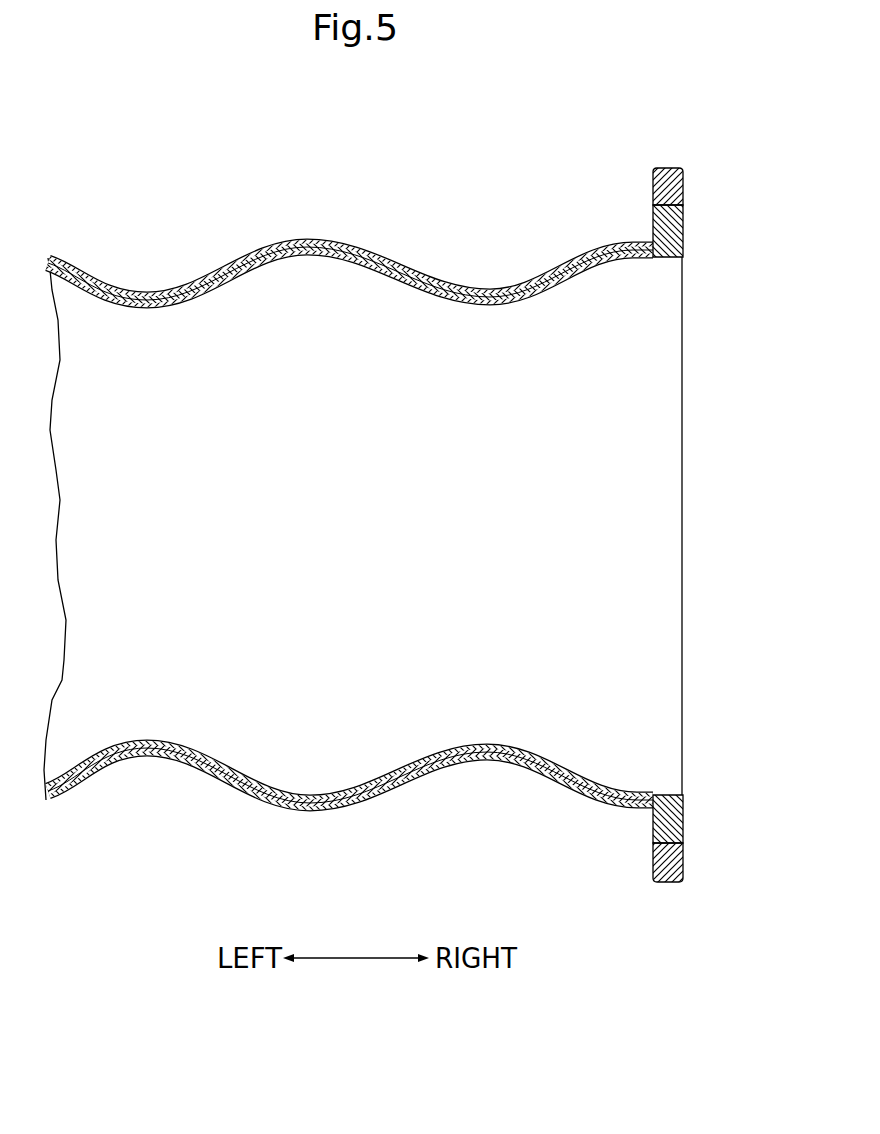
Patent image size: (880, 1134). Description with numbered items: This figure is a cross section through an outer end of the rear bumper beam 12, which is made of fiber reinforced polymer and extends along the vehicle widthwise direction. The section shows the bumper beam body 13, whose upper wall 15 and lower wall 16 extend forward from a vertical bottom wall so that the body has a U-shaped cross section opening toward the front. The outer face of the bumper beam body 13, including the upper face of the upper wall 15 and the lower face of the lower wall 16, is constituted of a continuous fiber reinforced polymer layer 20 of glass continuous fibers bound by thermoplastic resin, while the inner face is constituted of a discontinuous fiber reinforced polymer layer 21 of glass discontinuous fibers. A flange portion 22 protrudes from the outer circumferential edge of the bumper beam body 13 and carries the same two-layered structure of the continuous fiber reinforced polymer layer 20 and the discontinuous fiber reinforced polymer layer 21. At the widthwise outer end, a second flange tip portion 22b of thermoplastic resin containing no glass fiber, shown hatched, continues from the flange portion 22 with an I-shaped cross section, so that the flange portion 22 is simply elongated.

The rear bumper beam 12 is at (350, 439).
The bumper beam body 13 is at (350, 475).
The upper wall 15 is at (350, 525).
The lower wall 16 is at (333, 677).
The continuous fiber reinforced polymer layer 20 is at (327, 254).
The discontinuous fiber reinforced polymer layer 21 is at (233, 277).
The flange portion 22 is at (714, 512).
The second flange tip portion 22b is at (672, 176).